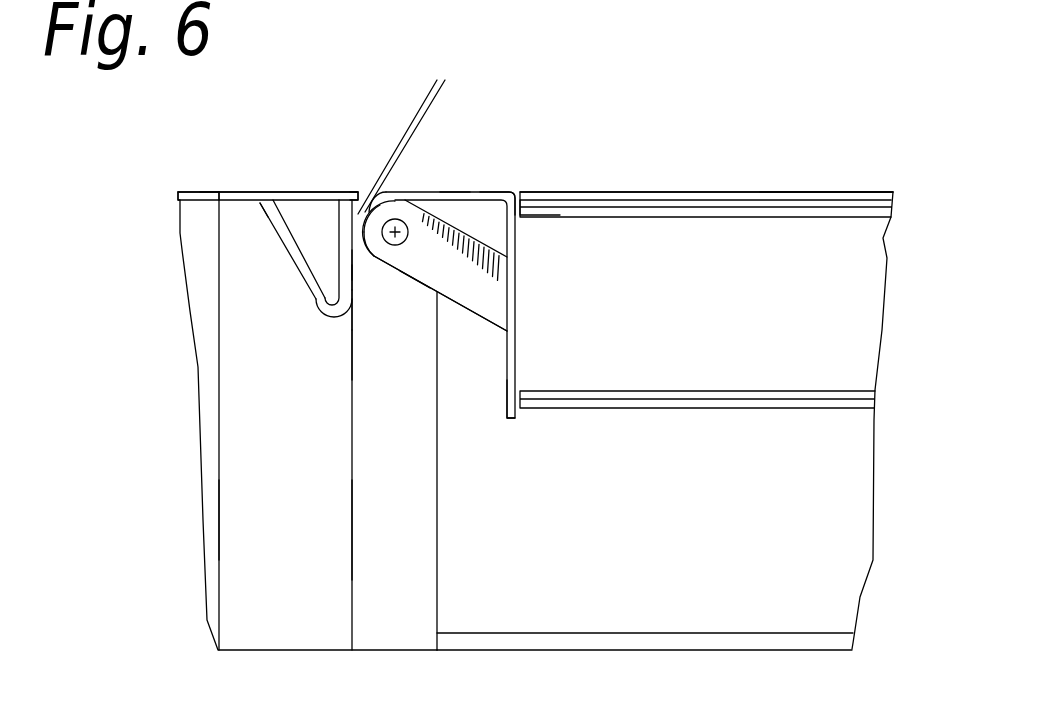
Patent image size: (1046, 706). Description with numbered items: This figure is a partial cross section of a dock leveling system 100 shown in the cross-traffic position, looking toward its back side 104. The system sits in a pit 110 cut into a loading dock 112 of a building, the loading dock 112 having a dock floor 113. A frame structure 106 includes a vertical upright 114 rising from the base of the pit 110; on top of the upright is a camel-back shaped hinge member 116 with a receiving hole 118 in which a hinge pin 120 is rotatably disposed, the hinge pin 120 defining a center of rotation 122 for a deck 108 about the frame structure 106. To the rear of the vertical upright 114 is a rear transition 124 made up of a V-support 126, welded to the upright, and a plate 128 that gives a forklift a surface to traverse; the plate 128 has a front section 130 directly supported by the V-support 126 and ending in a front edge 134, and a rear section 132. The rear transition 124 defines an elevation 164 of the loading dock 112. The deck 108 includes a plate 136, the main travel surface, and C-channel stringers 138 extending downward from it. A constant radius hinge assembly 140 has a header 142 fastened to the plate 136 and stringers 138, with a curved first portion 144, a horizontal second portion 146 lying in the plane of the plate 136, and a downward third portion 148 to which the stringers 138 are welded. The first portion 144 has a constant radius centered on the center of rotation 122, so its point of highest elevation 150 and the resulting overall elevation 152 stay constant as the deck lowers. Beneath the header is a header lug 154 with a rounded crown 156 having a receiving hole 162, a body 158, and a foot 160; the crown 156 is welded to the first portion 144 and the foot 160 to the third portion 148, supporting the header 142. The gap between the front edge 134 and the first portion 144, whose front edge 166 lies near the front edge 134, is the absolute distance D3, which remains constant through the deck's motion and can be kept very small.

The dock leveling system 100 is at (786, 104).
The back side 104 is at (296, 77).
The frame structure 106 is at (645, 633).
The deck 108 is at (710, 192).
The pit 110 is at (695, 558).
The loading dock 112 is at (187, 190).
The dock floor 113 is at (218, 184).
The vertical upright 114 is at (437, 588).
The hinge member 116 is at (373, 258).
The receiving hole 118 is at (376, 256).
The hinge pin 120 is at (392, 262).
The center of rotation 122 is at (401, 262).
The rear transition 124 is at (294, 199).
The V-support 126 is at (370, 257).
The plate 128 is at (274, 199).
The front section 130 is at (325, 185).
The rear section 132 is at (261, 205).
The front edge 134 is at (356, 191).
The plate 136 is at (787, 192).
The stringer 138 is at (688, 408).
The constant radius hinge assembly 140 is at (508, 196).
The header 142 is at (520, 197).
The first portion 144 is at (363, 212).
The second portion 146 is at (497, 178).
The third portion 148 is at (505, 408).
The point of highest elevation 150 is at (356, 212).
The overall elevation 152 is at (477, 200).
The header lug 154 is at (465, 310).
The crown 156 is at (366, 242).
The body 158 is at (411, 262).
The foot 160 is at (473, 242).
The receiving hole 162 is at (407, 262).
The elevation 164 is at (206, 185).
The front edge 166 is at (365, 224).
The absolute distance D3 is at (453, 118).